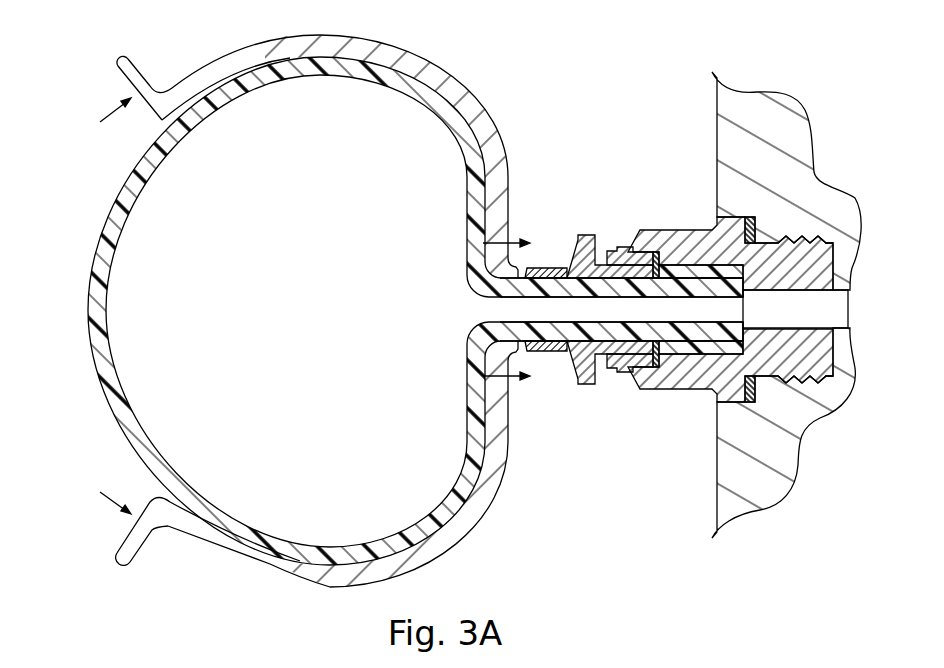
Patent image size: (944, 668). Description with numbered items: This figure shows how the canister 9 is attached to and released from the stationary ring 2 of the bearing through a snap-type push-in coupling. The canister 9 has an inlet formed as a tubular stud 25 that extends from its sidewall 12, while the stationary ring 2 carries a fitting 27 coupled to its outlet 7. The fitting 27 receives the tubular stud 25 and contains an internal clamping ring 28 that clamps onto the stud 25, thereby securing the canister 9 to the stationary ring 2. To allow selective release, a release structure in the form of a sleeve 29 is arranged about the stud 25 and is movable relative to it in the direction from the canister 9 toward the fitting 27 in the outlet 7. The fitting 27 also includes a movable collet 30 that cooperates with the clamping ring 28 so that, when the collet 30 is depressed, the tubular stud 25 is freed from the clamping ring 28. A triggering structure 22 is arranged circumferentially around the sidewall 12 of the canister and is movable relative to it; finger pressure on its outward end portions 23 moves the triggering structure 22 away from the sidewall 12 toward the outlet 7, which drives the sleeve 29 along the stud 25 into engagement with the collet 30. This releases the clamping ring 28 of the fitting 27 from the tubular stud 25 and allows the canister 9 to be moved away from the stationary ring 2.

The stationary ring 2 is at (783, 116).
The outlet 7 is at (808, 228).
The canister 9 is at (92, 302).
The sidewall 12 is at (508, 210).
The triggering structure 22 is at (445, 64).
The end portions 23 is at (140, 72).
The tubular stud 25 is at (690, 345).
The fitting 27 is at (672, 231).
The clamping ring 28 is at (655, 356).
The sleeve 29 is at (550, 343).
The collet 30 is at (585, 235).